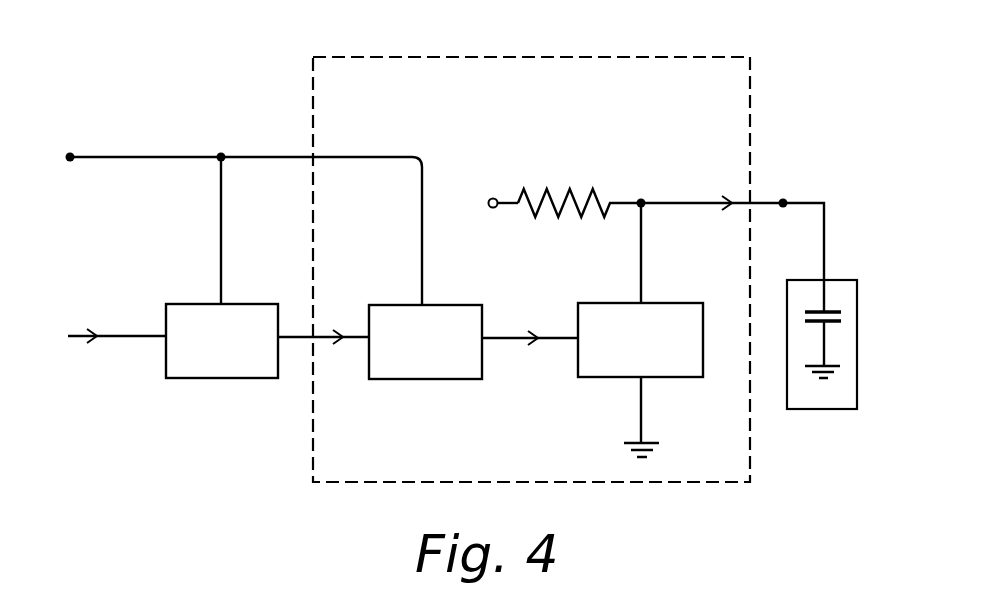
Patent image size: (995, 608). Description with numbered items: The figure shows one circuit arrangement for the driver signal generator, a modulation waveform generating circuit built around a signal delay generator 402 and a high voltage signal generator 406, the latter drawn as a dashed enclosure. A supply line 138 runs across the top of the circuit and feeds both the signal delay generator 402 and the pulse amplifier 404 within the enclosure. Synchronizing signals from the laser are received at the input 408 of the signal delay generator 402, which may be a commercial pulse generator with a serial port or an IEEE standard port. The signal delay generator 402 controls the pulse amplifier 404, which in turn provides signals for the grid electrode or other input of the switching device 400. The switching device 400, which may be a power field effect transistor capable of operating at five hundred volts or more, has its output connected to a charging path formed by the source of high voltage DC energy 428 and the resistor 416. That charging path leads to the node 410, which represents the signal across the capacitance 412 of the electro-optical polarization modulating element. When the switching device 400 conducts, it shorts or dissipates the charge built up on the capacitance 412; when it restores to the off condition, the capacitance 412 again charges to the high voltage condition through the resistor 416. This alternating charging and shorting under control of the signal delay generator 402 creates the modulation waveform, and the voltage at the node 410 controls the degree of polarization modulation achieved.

The power supply line 138 is at (120, 157).
The high voltage signal generator 406 is at (490, 57).
The synchronizing signal input 408 is at (72, 337).
The signal delay generator 402 is at (222, 378).
The pulse amplifier 404 is at (427, 379).
The switching device 400 is at (672, 303).
The source of high voltage DC energy 428 is at (494, 198).
The resistor 416 is at (577, 192).
The node 410 is at (784, 198).
The capacitance 412 is at (842, 409).